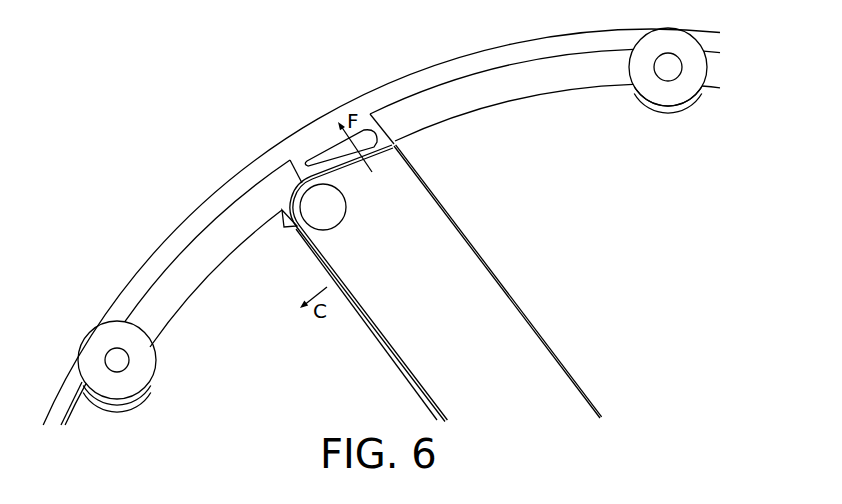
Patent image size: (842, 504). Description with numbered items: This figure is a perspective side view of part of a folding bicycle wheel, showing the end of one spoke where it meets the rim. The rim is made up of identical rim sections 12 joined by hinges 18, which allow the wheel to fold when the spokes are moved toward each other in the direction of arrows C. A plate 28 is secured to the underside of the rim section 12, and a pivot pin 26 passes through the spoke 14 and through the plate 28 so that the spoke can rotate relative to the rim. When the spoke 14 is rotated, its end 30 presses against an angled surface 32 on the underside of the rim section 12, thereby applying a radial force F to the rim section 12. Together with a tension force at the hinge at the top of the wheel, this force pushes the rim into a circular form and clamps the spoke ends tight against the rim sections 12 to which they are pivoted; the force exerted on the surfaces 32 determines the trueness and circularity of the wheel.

The rim section 12 is at (467, 63).
The spoke 14 is at (483, 273).
The hinge 18 is at (130, 362).
The pivot pin 26 is at (339, 217).
The plate 28 is at (284, 228).
The end of the spoke 30 is at (397, 158).
The angled surface 32 is at (393, 148).